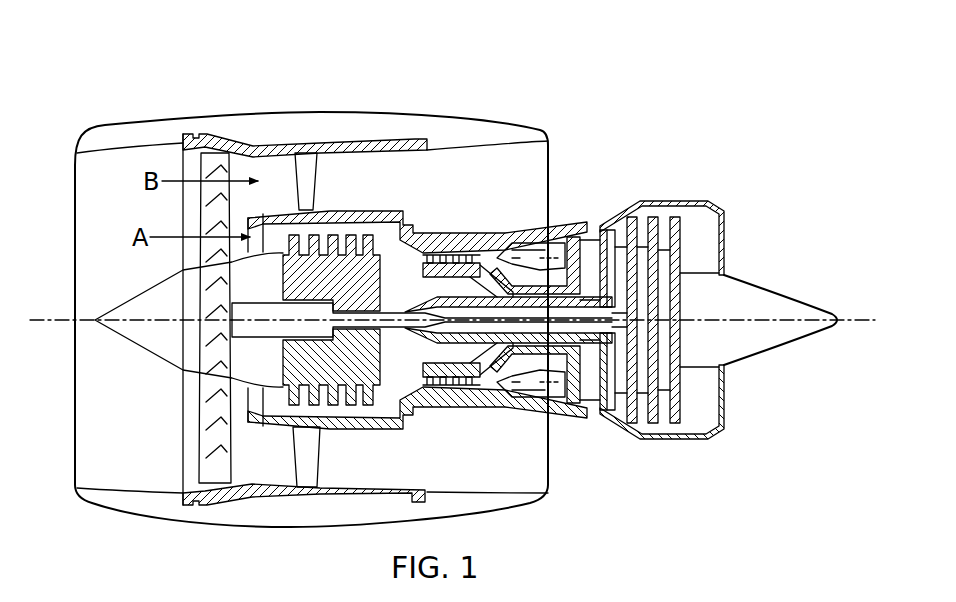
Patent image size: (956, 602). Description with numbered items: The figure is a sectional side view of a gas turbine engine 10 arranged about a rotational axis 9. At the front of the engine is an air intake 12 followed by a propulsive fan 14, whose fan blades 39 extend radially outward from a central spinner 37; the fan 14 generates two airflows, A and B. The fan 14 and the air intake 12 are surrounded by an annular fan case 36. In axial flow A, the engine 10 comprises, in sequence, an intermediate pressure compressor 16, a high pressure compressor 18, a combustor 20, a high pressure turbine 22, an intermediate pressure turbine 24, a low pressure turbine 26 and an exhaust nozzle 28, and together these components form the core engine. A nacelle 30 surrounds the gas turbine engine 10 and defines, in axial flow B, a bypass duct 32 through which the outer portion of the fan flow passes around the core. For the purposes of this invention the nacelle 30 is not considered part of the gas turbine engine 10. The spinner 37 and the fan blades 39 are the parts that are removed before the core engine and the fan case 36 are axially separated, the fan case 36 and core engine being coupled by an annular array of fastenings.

The rotational axis 9 is at (866, 324).
The gas turbine engine 10 is at (122, 80).
The air intake 12 is at (75, 230).
The propulsive fan 14 is at (203, 175).
The intermediate pressure compressor 16 is at (337, 232).
The high pressure compressor 18 is at (449, 258).
The combustor 20 is at (518, 254).
The high pressure turbine 22 is at (571, 244).
The intermediate pressure turbine 24 is at (604, 228).
The low pressure turbine 26 is at (674, 214).
The exhaust nozzle 28 is at (724, 256).
The nacelle 30 is at (314, 147).
The bypass duct 32 is at (398, 197).
The annular fan case 36 is at (237, 141).
The spinner 37 is at (165, 340).
The fan blades 39 is at (202, 452).